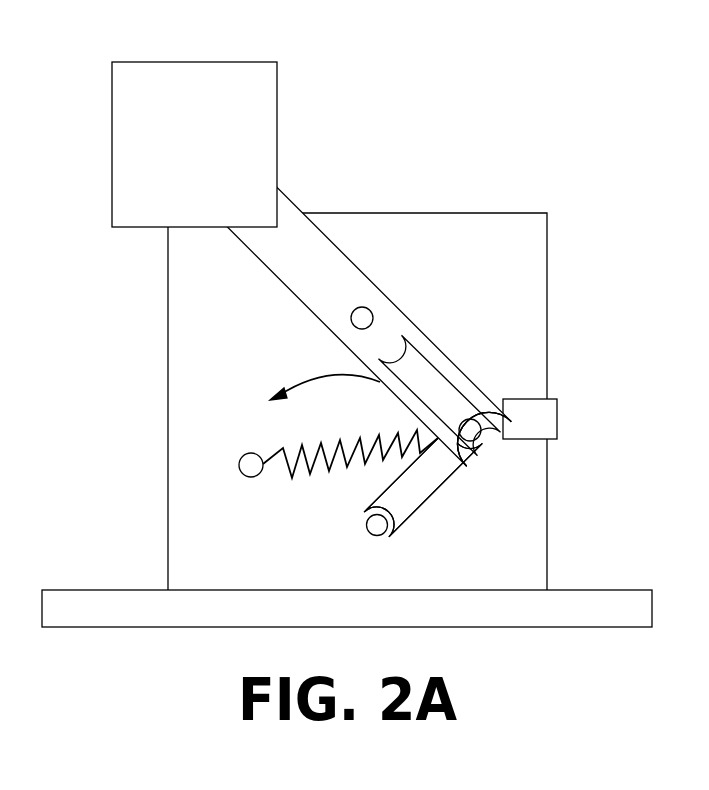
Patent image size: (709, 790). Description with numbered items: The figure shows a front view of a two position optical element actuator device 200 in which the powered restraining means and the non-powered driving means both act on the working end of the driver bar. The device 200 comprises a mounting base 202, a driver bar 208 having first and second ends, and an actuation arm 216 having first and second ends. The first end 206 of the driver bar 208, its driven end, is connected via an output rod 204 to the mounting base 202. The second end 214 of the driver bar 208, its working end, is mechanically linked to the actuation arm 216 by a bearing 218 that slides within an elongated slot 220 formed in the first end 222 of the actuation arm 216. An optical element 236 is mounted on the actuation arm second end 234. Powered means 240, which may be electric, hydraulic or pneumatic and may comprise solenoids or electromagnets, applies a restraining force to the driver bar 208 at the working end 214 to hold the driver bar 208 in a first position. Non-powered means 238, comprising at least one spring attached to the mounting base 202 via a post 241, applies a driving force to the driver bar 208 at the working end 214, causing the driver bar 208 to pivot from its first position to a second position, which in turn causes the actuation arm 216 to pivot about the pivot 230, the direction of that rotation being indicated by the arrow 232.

The two position optical element actuator device 200 is at (337, 98).
The mounting base 202 is at (167, 547).
The output rod 204 is at (390, 530).
The first end of driver bar 206 is at (368, 536).
The driver bar 208 is at (421, 491).
The second end of driver bar 214 is at (517, 460).
The actuation arm 216 is at (310, 247).
The bearing 218 is at (470, 428).
The elongated slot 220 is at (415, 360).
The first end of actuation arm 222 is at (507, 421).
The pivot 230 is at (368, 308).
The rotation direction arrow 232 is at (307, 382).
The actuation arm second end 234 is at (285, 192).
The optical element 236 is at (221, 123).
The non-powered means 238 is at (323, 482).
The powered means 240 is at (558, 420).
The post 241 is at (239, 466).